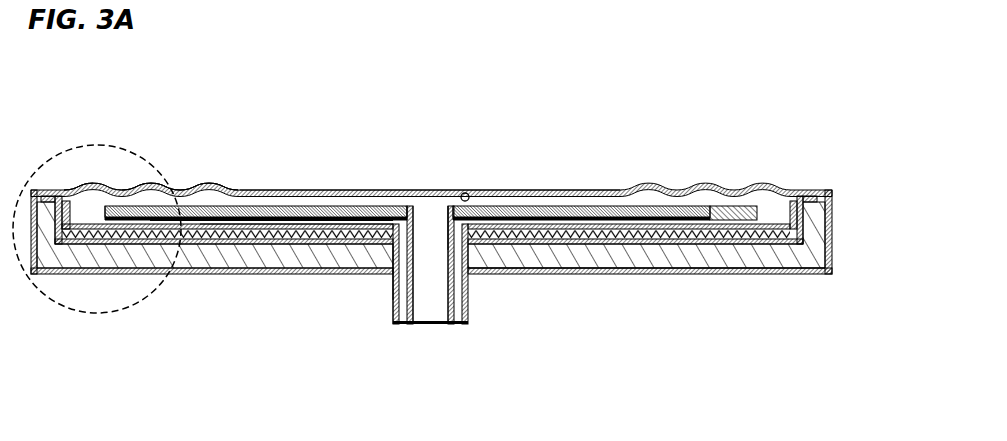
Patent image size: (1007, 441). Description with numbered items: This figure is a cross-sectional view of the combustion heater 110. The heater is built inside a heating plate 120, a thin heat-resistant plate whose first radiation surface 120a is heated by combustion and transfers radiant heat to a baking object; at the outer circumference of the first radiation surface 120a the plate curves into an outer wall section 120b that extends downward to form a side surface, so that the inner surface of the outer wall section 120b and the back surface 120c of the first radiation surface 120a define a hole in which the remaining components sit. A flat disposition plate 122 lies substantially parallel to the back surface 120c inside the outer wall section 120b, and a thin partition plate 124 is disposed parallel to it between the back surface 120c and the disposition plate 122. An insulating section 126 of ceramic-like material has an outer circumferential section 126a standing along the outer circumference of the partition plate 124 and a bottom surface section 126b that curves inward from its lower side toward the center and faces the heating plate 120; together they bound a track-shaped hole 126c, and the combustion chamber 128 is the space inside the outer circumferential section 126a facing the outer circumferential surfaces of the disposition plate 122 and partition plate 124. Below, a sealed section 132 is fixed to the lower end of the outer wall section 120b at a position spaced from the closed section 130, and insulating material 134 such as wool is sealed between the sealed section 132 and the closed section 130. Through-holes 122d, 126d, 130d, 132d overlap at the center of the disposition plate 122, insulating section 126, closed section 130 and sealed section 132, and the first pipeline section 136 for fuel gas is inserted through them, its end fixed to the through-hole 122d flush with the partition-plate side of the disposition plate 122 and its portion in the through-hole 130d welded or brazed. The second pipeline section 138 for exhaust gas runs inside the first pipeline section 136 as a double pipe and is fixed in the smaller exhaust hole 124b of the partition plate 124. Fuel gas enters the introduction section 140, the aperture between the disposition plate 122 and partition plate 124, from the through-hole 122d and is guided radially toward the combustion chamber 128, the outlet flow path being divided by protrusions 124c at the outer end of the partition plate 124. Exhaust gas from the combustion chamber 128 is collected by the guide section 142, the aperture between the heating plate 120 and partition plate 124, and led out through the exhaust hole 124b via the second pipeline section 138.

The combustion heater 110 is at (571, 90).
The heating plate 120 is at (828, 190).
The first radiation surface 120a is at (518, 190).
The outer wall section 120b is at (832, 228).
The back surface 120c is at (462, 192).
The disposition plate 122 is at (776, 222).
The through-hole 122d is at (413, 224).
The partition plate 124 is at (600, 207).
The exhaust hole 124b is at (418, 206).
The protrusions 124c is at (101, 223).
The insulating section 126 is at (93, 215).
The outer circumferential section 126a is at (80, 183).
The bottom surface section 126b is at (115, 193).
The hole 126c is at (100, 196).
The through-hole 126d is at (418, 214).
The combustion chamber 128 is at (783, 273).
The closed section 130 is at (548, 243).
The through-hole 130d is at (397, 302).
The sealed section 132 is at (620, 265).
The through-hole 132d is at (395, 289).
The insulating material 134 is at (697, 257).
The first pipeline section 136 is at (470, 306).
The second pipeline section 138 is at (451, 324).
The introduction section 140 is at (208, 225).
The guide section 142 is at (286, 222).